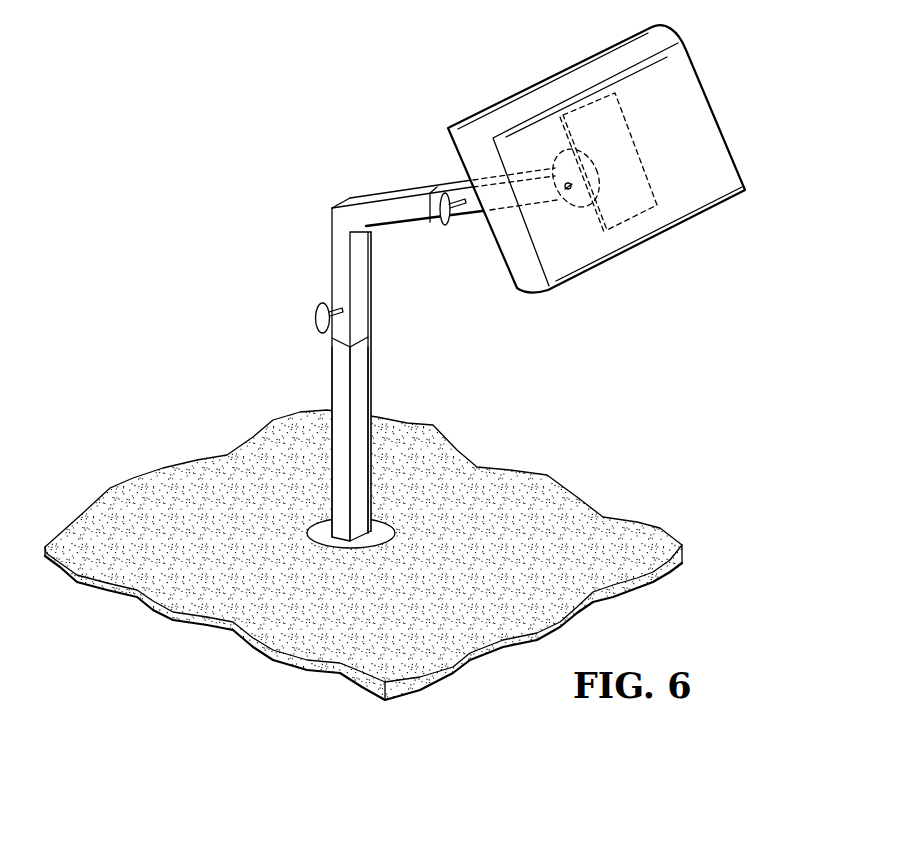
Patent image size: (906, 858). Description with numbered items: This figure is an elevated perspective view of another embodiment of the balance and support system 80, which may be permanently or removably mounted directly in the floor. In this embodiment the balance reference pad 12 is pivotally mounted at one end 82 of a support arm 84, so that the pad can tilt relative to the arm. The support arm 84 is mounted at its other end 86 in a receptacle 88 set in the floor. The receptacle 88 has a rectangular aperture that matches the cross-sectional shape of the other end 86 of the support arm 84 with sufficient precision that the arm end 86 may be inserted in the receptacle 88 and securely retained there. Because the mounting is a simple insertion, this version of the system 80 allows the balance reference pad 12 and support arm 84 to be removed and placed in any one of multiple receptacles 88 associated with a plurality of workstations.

The balance reference pad 12 is at (717, 103).
The balance and support system 80 is at (327, 117).
The one end of the support arm 82 is at (597, 196).
The support arm 84 is at (390, 213).
The other end of the support arm 86 is at (372, 446).
The receptacle 88 is at (380, 524).